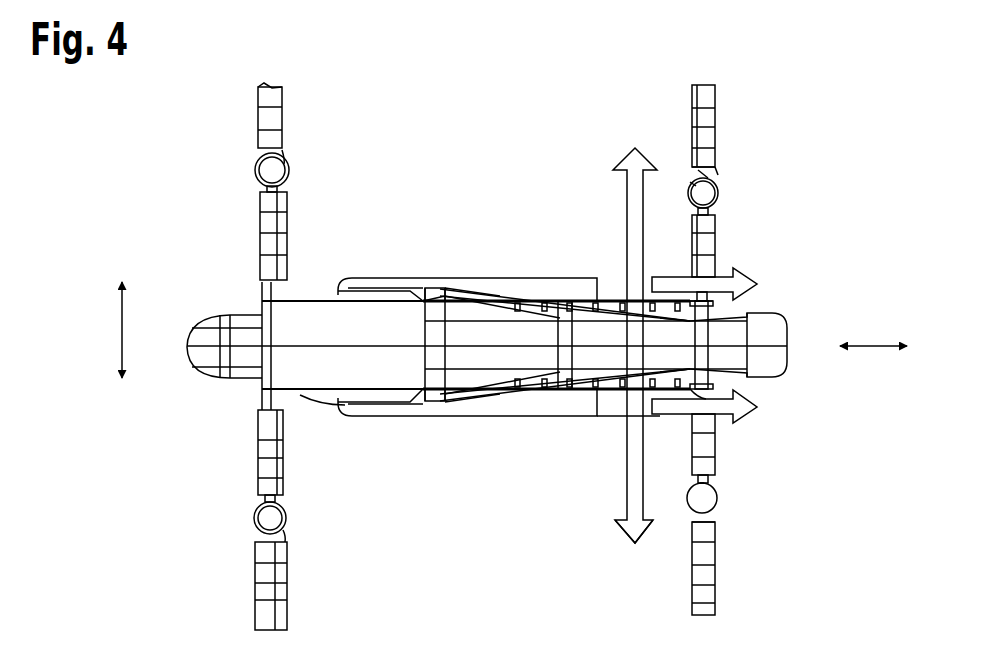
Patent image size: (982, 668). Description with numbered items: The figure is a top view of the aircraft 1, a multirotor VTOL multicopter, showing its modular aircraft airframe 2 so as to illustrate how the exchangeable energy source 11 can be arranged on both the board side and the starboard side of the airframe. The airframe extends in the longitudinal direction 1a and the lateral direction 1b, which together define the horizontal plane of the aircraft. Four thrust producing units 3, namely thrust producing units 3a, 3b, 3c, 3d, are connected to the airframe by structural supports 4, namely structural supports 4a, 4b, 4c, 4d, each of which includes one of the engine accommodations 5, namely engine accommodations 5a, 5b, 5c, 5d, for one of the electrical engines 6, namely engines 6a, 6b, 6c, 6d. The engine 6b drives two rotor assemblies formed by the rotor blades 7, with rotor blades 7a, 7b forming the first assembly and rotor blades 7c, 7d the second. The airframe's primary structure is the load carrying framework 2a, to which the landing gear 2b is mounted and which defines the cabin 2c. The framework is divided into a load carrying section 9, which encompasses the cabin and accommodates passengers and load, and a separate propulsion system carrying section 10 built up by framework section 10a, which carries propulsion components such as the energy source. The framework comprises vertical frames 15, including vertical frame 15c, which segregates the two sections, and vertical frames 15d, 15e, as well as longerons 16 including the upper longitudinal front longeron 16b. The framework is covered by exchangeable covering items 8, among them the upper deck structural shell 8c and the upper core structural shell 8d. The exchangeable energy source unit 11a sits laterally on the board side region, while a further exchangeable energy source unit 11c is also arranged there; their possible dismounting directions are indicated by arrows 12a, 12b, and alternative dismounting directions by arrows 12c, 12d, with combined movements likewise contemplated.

The aircraft 1 is at (146, 197).
The longitudinal direction 1a is at (870, 345).
The lateral direction 1b is at (118, 340).
The aircraft airframe 2 is at (204, 358).
The load carrying framework 2a is at (422, 420).
The landing gear 2b is at (487, 420).
The cabin 2c is at (258, 302).
The thrust producing units 3 is at (246, 152).
The thrust producing unit 3a is at (250, 170).
The thrust producing unit 3b is at (728, 164).
The thrust producing unit 3c is at (250, 500).
The thrust producing unit 3d is at (716, 503).
The structural supports 4 is at (258, 290).
The structural support 4a is at (283, 194).
The structural support 4b is at (710, 212).
The structural support 4c is at (283, 499).
The structural support 4d is at (705, 478).
The engine accommodations 5 is at (298, 160).
The engine accommodation 5a is at (286, 176).
The engine accommodation 5b is at (716, 190).
The engine accommodation 5c is at (285, 532).
The engine accommodation 5d is at (712, 512).
The engines 6 is at (258, 530).
The engine 6a is at (283, 158).
The engine 6b is at (690, 188).
The engine 6c is at (288, 524).
The engine 6d is at (716, 488).
The rotor blades 7 is at (730, 88).
The rotor blade 7a is at (709, 114).
The rotor blade 7b is at (700, 248).
The rotor blade 7c is at (692, 104).
The rotor blade 7d is at (715, 243).
The exchangeable covering items 8 is at (372, 307).
The exchangeable upper deck structural shell 8c is at (293, 337).
The exchangeable upper core structural shell 8d is at (540, 305).
The load carrying section 9 is at (312, 420).
The propulsion system carrying section 10 is at (520, 412).
The framework section 10a is at (710, 400).
The exchangeable energy source 11 is at (608, 283).
The exchangeable energy source unit 11a is at (556, 395).
The exchangeable energy source unit 11c is at (515, 278).
The dismounting direction arrow 12a is at (632, 503).
The dismounting direction arrow 12b is at (632, 174).
The alternative dismounting direction arrow 12c is at (738, 406).
The alternative dismounting direction arrow 12d is at (735, 296).
The vertical frames 15 is at (457, 402).
The vertical frame 15c is at (440, 304).
The vertical frame 15d is at (562, 300).
The vertical frame 15e is at (680, 338).
The longerons 16 is at (500, 293).
The upper longitudinal front longeron 16b is at (428, 302).